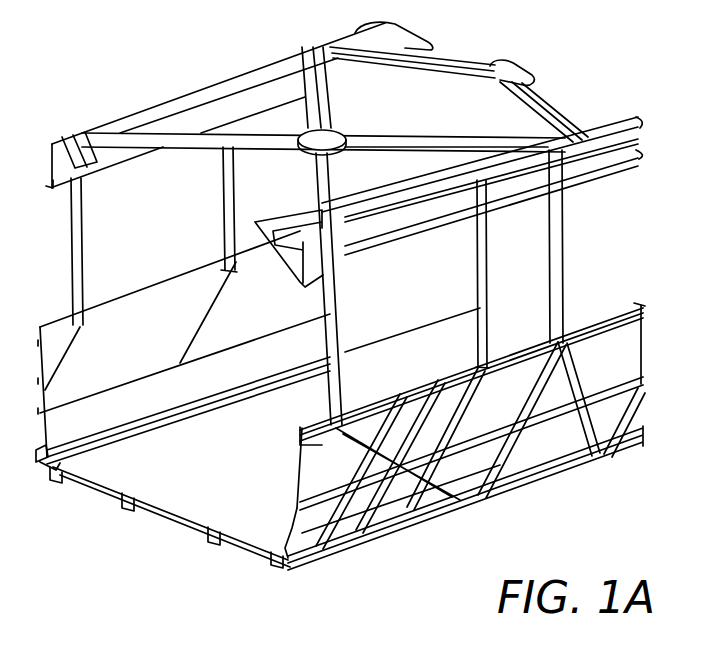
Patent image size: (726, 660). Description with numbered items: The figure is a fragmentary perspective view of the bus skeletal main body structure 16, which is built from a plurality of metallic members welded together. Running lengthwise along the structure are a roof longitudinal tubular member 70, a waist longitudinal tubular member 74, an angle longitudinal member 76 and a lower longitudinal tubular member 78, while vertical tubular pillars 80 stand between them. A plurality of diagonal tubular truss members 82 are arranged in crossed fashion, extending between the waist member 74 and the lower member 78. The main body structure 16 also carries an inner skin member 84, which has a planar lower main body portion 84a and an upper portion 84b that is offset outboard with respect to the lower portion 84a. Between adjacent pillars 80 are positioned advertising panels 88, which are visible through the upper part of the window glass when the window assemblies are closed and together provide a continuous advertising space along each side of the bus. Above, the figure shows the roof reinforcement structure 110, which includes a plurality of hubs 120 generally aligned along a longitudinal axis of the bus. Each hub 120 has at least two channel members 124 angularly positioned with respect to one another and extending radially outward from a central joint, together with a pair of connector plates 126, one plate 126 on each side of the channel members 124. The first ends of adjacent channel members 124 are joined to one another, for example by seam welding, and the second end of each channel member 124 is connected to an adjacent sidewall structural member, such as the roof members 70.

The main body structure 16 is at (483, 30).
The roof longitudinal tubular member 70 is at (600, 128).
The waist longitudinal tubular member 74 is at (641, 307).
The angle longitudinal member 76 is at (463, 452).
The lower longitudinal tubular member 78 is at (372, 538).
The vertical tubular pillars 80 is at (563, 230).
The diagonal tubular truss members 82 is at (575, 432).
The inner skin member 84 is at (597, 317).
The lower main body portion 84a is at (290, 522).
The upper portion 84b is at (293, 458).
The panels 88 is at (423, 217).
The roof reinforcement structure 110 is at (250, 67).
The hub 120 is at (481, 99).
The channel members 124 is at (185, 148).
The connector plates 126 is at (277, 157).